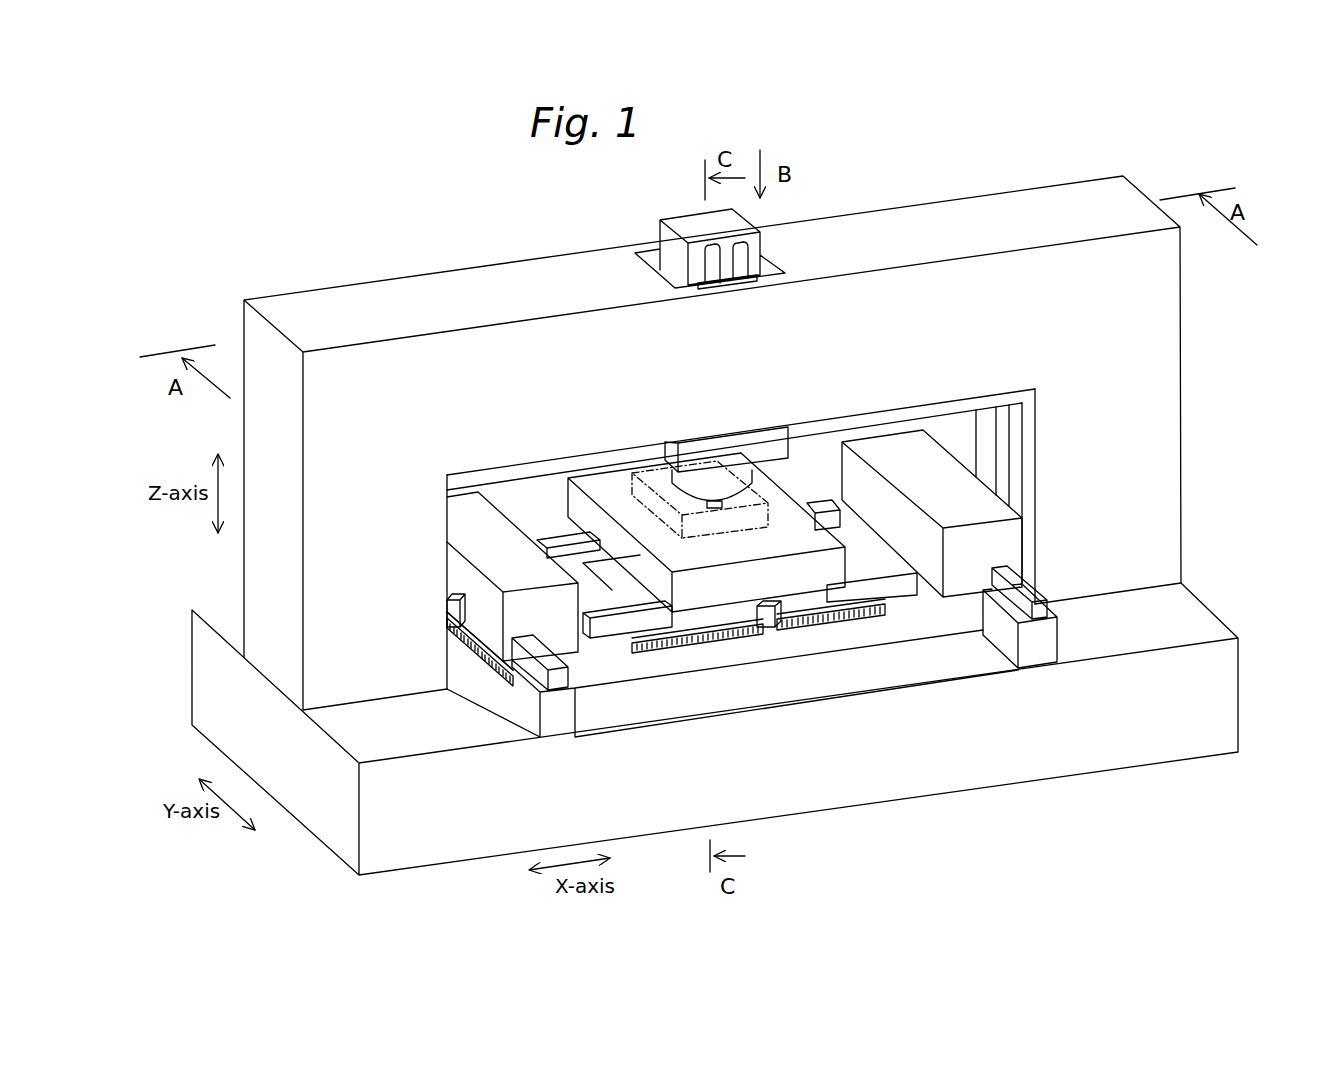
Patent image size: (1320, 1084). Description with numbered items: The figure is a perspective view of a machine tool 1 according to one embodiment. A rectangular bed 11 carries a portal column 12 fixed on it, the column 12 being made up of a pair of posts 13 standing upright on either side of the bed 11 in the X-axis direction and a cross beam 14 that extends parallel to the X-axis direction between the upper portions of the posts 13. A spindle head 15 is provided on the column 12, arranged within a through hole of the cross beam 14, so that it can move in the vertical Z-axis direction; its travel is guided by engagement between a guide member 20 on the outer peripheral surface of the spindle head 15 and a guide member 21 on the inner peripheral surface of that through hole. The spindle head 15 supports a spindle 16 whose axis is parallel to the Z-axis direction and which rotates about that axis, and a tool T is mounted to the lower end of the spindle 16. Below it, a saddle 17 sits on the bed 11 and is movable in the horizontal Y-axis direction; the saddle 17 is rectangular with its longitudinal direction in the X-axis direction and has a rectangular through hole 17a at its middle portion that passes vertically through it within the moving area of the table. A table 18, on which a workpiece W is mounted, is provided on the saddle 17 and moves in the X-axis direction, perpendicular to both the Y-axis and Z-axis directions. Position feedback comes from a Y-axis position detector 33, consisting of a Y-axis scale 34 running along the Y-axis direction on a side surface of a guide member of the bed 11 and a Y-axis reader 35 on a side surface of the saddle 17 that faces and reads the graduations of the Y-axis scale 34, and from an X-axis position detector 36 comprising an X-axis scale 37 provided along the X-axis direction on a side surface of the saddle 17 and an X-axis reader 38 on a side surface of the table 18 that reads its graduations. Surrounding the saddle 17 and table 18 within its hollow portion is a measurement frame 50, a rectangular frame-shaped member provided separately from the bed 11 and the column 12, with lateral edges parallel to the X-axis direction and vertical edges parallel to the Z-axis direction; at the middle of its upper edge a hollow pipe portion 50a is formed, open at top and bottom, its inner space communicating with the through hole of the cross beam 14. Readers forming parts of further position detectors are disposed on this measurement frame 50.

The machine tool 1 is at (495, 184).
The bed 11 is at (1022, 770).
The column 12 is at (727, 443).
The posts 13 is at (1168, 400).
The cross beam 14 is at (438, 283).
The spindle head 15 is at (680, 220).
The spindle 16 is at (742, 483).
The saddle 17 is at (632, 672).
The through hole 17a is at (630, 597).
The table 18 is at (806, 600).
The guide member 20 is at (746, 265).
The guide member 21 is at (728, 280).
The Y-axis position detector 33 is at (467, 658).
The Y-axis scale 34 is at (494, 672).
The Y-axis reader 35 is at (447, 620).
The X-axis position detector 36 is at (784, 644).
The X-axis scale 37 is at (725, 645).
The X-axis reader 38 is at (768, 632).
The measurement frame 50 is at (882, 418).
The pipe portion 50a is at (738, 452).
The workpiece W is at (715, 528).
The tool T is at (720, 503).